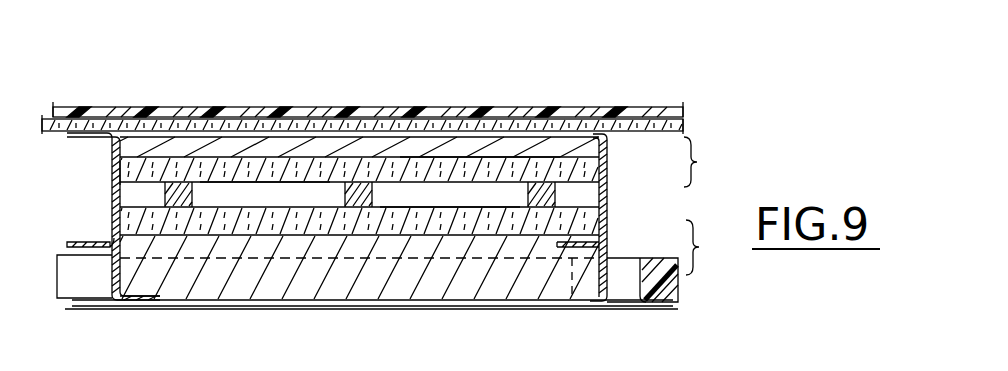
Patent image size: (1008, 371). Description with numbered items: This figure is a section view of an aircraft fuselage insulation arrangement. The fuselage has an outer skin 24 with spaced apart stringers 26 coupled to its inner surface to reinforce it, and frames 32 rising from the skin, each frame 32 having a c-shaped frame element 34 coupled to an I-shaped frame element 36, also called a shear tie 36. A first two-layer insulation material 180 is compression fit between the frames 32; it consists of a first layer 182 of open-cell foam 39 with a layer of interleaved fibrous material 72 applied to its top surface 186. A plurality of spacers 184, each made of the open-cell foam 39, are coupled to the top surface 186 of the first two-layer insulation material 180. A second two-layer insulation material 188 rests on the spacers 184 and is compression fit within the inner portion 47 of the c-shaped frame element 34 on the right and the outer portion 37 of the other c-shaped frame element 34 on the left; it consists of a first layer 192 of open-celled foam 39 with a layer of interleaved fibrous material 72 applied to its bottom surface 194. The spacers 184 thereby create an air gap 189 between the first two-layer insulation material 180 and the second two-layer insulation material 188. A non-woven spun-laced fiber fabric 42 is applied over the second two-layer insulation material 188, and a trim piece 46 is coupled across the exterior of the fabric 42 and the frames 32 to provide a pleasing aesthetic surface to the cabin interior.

The trim piece 46 is at (115, 111).
The non-woven spun-laced fiber fabric 42 is at (163, 128).
The c-shaped frame element 34 is at (113, 146).
The outer portion 37 is at (113, 170).
The I-shaped frame element 36 is at (119, 282).
The frame 32 is at (80, 203).
The first layer of the second two-layer insulation material 192 is at (596, 153).
The interleaved fibrous material 72 is at (253, 175).
The first layer of the first two-layer insulation material 182 is at (222, 292).
The spacers 184 is at (360, 200).
The air gap 189 is at (307, 197).
The top surface 186 is at (427, 210).
The bottom surface 194 is at (487, 158).
The open-cell foam 39 is at (552, 294).
The outer skin 24 is at (102, 308).
The stringers 26 is at (66, 275).
The inner portion 47 is at (592, 240).
The second two-layer insulation material 188 is at (716, 162).
The first two-layer insulation material 180 is at (717, 247).